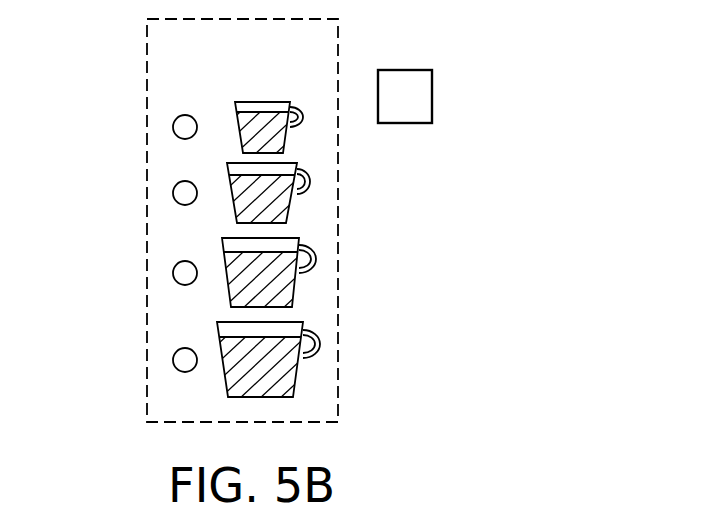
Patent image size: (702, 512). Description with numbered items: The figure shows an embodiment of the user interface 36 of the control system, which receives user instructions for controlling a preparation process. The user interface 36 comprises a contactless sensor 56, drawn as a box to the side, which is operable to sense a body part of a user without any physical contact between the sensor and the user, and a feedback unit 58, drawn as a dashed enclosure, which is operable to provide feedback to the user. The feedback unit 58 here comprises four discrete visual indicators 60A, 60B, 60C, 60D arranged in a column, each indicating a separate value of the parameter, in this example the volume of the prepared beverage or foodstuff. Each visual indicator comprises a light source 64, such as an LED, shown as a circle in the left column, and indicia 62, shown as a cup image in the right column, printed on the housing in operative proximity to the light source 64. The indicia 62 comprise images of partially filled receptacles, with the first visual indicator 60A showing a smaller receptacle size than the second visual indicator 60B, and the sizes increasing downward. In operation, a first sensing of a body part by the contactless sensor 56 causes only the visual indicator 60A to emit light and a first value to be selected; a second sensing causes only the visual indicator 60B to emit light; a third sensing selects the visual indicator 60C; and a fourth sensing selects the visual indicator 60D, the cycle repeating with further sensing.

The user interface 36 is at (467, 34).
The contactless sensor 56 is at (432, 98).
The feedback unit 58 is at (147, 53).
The first visual indicator 60A is at (123, 100).
The second visual indicator 60B is at (123, 162).
The third visual indicator 60C is at (123, 240).
The fourth visual indicator 60D is at (123, 322).
The indicia 62 is at (233, 80).
The light source 64 is at (167, 80).